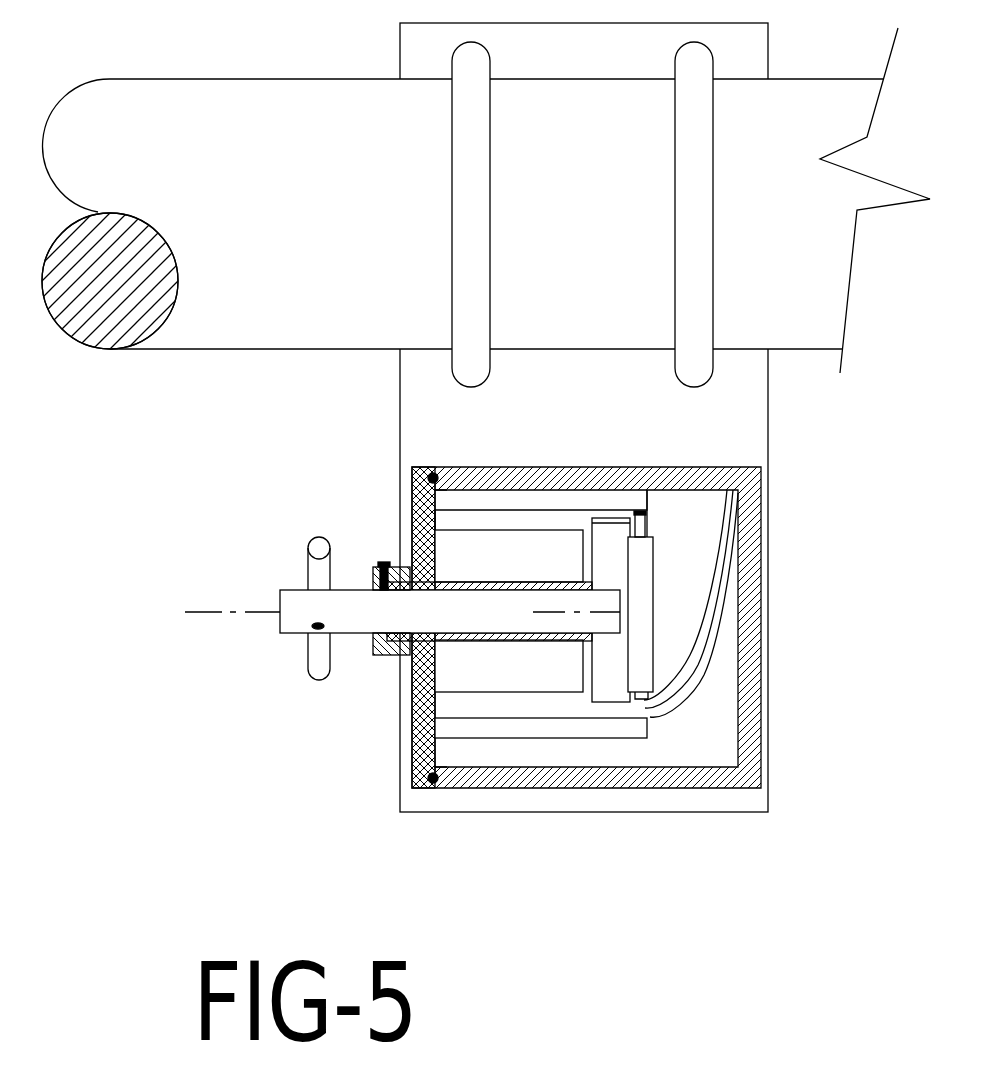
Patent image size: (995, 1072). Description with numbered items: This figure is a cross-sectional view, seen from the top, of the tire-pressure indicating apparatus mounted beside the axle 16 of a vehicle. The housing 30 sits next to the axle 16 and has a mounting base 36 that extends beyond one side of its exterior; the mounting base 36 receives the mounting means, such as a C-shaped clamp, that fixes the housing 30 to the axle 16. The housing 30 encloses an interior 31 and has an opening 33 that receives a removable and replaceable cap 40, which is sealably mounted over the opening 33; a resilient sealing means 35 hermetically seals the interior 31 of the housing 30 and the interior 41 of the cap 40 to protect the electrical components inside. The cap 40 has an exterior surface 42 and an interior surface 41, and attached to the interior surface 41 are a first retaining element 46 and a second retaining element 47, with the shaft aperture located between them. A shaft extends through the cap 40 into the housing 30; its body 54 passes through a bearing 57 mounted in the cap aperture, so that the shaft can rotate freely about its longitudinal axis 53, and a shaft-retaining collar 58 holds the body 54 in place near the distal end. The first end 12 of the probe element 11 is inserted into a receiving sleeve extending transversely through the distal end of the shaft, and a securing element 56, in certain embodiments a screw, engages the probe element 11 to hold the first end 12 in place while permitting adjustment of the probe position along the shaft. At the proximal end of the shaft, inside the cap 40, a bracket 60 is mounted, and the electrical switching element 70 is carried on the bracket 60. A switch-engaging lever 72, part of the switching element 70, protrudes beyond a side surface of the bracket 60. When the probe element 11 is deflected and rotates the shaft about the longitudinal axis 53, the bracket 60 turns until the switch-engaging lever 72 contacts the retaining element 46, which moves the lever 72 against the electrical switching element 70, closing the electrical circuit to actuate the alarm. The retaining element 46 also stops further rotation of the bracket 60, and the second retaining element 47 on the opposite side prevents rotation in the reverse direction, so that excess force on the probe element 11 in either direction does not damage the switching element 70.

The probe element 11 is at (318, 674).
The first end 12 is at (303, 533).
The axle 16 is at (770, 253).
The housing 30 is at (600, 477).
The interior 31 is at (707, 500).
The opening 33 is at (435, 472).
The resilient sealing means 35 is at (450, 481).
The mounting base 36 is at (762, 443).
The cap 40 is at (410, 532).
The interior surface 41 is at (435, 516).
The exterior surface 42 is at (596, 643).
The retaining element 46 is at (548, 500).
The second retaining element 47 is at (566, 733).
The longitudinal axis 53 is at (221, 624).
The body 54 is at (420, 626).
The securing element 56 is at (313, 631).
The bearing 57 is at (592, 580).
The shaft-retaining collar 58 is at (522, 570).
The bracket 60 is at (597, 561).
The electrical switching element 70 is at (645, 630).
The switch-engaging lever 72 is at (645, 518).